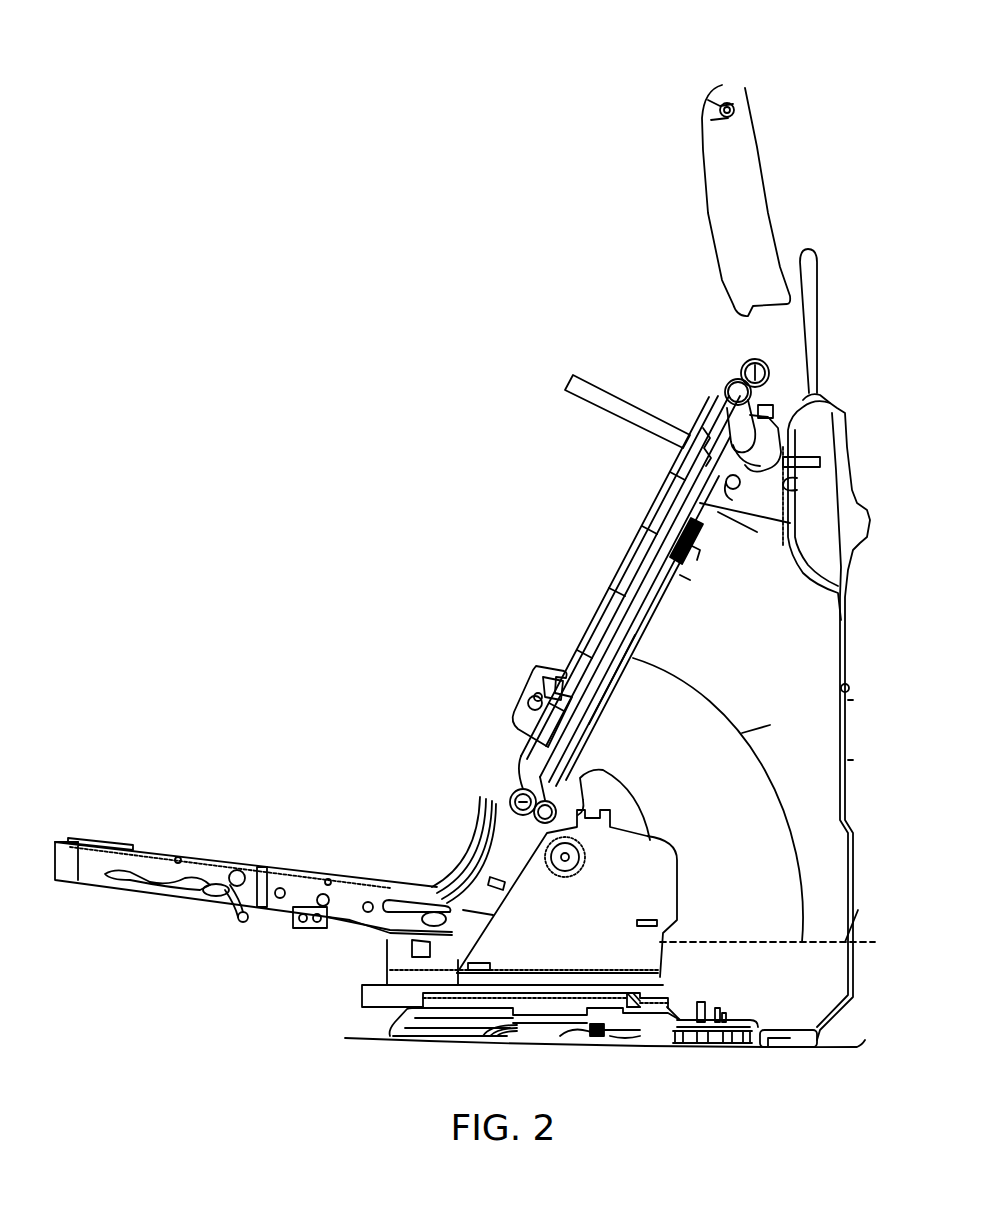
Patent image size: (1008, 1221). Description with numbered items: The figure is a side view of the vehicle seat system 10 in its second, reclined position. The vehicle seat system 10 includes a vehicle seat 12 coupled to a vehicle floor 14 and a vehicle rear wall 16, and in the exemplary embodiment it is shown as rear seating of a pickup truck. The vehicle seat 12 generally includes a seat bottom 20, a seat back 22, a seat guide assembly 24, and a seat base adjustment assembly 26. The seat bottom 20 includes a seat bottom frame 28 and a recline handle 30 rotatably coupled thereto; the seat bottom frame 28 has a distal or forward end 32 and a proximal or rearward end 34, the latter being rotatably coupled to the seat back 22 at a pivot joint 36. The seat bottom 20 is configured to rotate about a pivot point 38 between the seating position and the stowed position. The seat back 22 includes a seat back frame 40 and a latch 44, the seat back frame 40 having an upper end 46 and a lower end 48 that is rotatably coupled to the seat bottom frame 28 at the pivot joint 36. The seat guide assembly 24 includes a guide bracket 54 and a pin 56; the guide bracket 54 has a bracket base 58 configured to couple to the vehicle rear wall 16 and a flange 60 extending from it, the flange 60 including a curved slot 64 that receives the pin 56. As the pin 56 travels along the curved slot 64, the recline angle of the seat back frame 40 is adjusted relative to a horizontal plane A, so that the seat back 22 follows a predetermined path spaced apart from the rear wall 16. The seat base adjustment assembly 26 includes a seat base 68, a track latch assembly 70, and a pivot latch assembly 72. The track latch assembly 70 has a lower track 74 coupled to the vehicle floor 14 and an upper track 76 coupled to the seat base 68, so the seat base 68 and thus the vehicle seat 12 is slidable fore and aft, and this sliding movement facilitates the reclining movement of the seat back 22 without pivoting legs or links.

The vehicle seat system 10 is at (404, 273).
The vehicle seat 12 is at (428, 788).
The vehicle floor 14 is at (366, 1042).
The vehicle rear wall 16 is at (840, 688).
The seat bottom 20 is at (166, 907).
The seat back 22 is at (590, 598).
The seat guide assembly 24 is at (797, 383).
The seat base adjustment assembly 26 is at (681, 972).
The seat bottom frame 28 is at (222, 865).
The recline handle 30 is at (185, 890).
The forward end 32 is at (63, 833).
The rearward end 34 is at (478, 793).
The pivot joint 36 is at (560, 790).
The pivot point 38 is at (567, 857).
The seat back frame 40 is at (668, 520).
The latch 44 is at (772, 400).
The upper end 46 is at (704, 380).
The lower end 48 is at (514, 768).
The guide bracket 54 is at (765, 527).
The pin 56 is at (716, 497).
The bracket base 58 is at (797, 485).
The flange 60 is at (780, 497).
The curved slot 64 is at (745, 494).
The seat base 68 is at (665, 890).
The track latch assembly 70 is at (600, 1015).
The pivot latch assembly 72 is at (656, 826).
The lower track 74 is at (532, 1010).
The upper track 76 is at (673, 1022).
The horizontal plane A is at (767, 913).